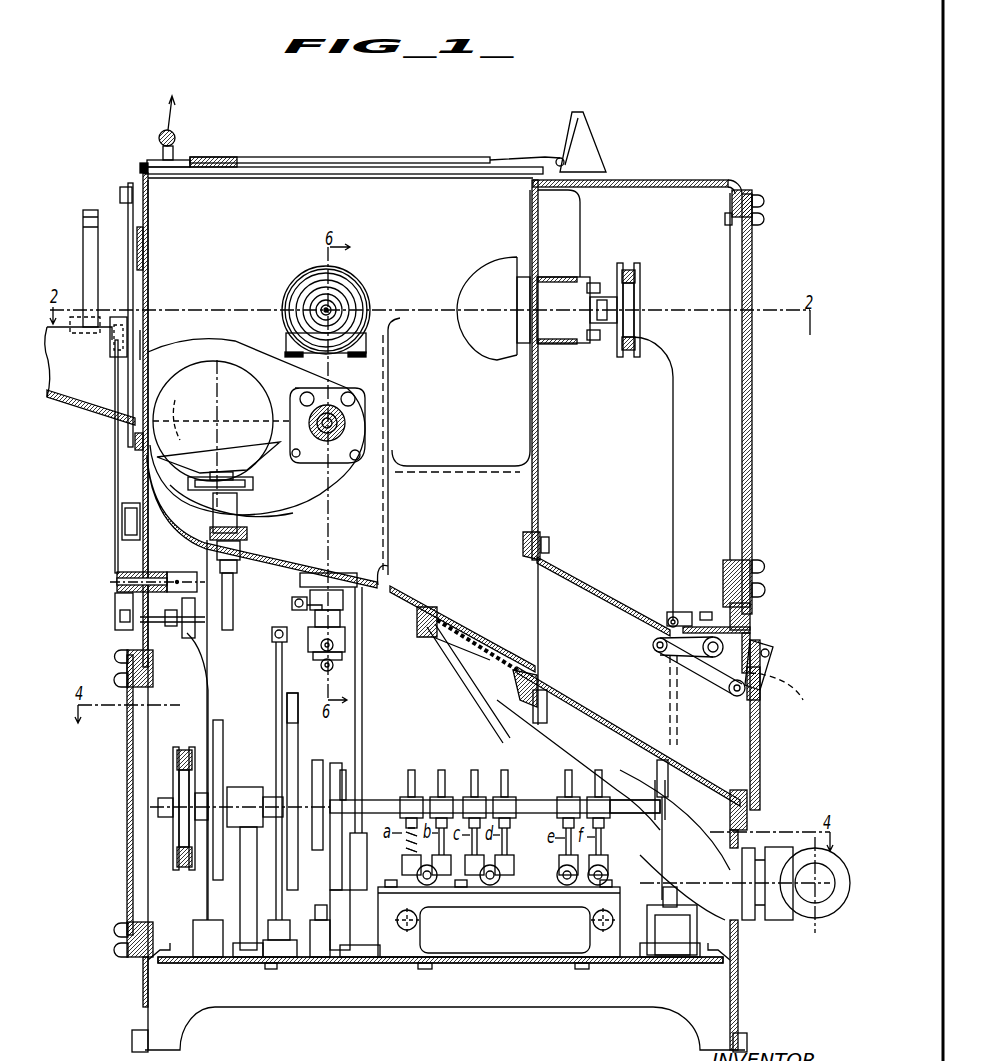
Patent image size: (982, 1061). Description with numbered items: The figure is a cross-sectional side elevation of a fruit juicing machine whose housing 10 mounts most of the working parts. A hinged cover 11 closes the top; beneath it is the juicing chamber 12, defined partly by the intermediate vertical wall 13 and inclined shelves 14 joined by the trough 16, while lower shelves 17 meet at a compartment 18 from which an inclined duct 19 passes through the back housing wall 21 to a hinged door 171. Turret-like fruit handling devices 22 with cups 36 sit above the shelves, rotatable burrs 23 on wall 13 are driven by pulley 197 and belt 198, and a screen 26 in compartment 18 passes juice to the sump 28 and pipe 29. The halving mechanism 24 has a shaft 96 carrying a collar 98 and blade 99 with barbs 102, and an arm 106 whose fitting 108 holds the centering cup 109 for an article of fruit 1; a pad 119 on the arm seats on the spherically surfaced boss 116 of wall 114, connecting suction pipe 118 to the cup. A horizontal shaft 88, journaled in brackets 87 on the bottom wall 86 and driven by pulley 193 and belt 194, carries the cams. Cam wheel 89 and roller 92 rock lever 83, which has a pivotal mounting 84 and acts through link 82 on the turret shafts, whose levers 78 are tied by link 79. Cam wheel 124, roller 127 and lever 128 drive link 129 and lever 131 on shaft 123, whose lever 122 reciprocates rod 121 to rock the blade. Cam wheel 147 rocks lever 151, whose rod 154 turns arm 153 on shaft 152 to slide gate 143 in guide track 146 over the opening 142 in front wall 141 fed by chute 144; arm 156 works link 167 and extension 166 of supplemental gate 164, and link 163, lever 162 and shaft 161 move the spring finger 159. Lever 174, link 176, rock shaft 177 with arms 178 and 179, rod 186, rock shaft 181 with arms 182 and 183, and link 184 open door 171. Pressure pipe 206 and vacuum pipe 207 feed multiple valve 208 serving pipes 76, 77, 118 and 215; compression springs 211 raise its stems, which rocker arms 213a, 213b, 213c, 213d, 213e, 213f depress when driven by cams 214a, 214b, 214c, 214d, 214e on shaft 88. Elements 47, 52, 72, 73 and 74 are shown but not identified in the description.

The article of fruit 1 is at (180, 350).
The housing 10 is at (623, 180).
The hinged cover 11 is at (302, 160).
The chamber 12 is at (382, 197).
The intermediate vertical wall 13 is at (538, 408).
The inclined shelves 14 is at (380, 355).
The trough 16 is at (382, 588).
The lower shelves 17 is at (468, 465).
The compartment 18 is at (498, 527).
The inclined duct 19 is at (602, 607).
The back housing wall 21 is at (740, 827).
The turret-like fruit handling devices 22 is at (312, 263).
The rotatable burrs 23 is at (493, 263).
The mechanism for halving and presenting fruit 24 is at (337, 488).
The screen 26 is at (442, 657).
The sump 28 is at (472, 687).
The pipe 29 is at (578, 745).
The cups 36 is at (357, 283).
The motor shaft 47 is at (313, 293).
The valve mounting block 52 is at (303, 577).
The valve body 72 is at (345, 632).
The lower valve port 73 is at (338, 667).
The valve port 74 is at (332, 643).
The pipe 76 is at (488, 886).
The pipe 77 is at (430, 886).
The levers 78 is at (308, 612).
The link 79 is at (292, 603).
The link 82 is at (272, 635).
The lever 83 is at (276, 665).
The pivotal mounting 84 is at (313, 963).
The bottom wall 86 is at (470, 964).
The journal brackets 87 is at (240, 903).
The horizontal shaft 88 is at (378, 795).
The cam wheel 89 is at (298, 690).
The roller 92 is at (285, 795).
The rotatable shaft 96 is at (318, 447).
The collar 98 is at (365, 408).
The cutting blade 99 is at (220, 330).
The barbs 102 is at (210, 432).
The arm 106 is at (291, 510).
The fitting 108 is at (205, 485).
The fruit centering cup 109 is at (172, 462).
The wall 114 is at (237, 570).
The spherically surfaced boss 116 is at (245, 540).
The suction pipe 118 is at (233, 596).
The pad 119 is at (240, 527).
The rod 121 is at (363, 693).
The lever 122 is at (375, 860).
The shaft 123 is at (318, 915).
The cam wheel 124 is at (315, 760).
The roller 127 is at (342, 765).
The lever 128 is at (325, 868).
The link 129 is at (345, 775).
The lever 131 is at (360, 963).
The front wall 141 is at (148, 205).
The opening 142 is at (143, 277).
The gate 143 is at (137, 353).
The chute 144 is at (70, 400).
The guide track 146 is at (140, 180).
The cam wheel 147 is at (220, 722).
The lever 151 is at (215, 663).
The shaft 152 is at (117, 578).
The arm 153 is at (180, 572).
The rod 154 is at (185, 633).
The arm 156 is at (120, 628).
The finger 159 is at (88, 212).
The shaft 161 is at (95, 345).
The lever 162 is at (110, 355).
The link 163 is at (115, 465).
The supplemental gate 164 is at (137, 293).
The depending extension 166 is at (140, 447).
The link 167 is at (122, 530).
The hinged door 171 is at (760, 722).
The pivoted lever 174 is at (655, 792).
The link 176 is at (668, 797).
The rock shaft 177 is at (695, 922).
The arm 178 is at (673, 893).
The arm 179 is at (670, 887).
The rock shaft 181 is at (712, 670).
The arm 182 is at (677, 620).
The arm 183 is at (656, 648).
The link 184 is at (665, 660).
The rod 186 is at (680, 714).
The pulley 193 is at (176, 748).
The belt 194 is at (182, 870).
The pulley 197 is at (640, 270).
The belt 198 is at (623, 358).
The pipe 206 is at (418, 925).
The pipe 207 is at (593, 925).
The multiple valve 208 is at (487, 907).
The compression spring 211 is at (406, 845).
The rocker arm 213a is at (415, 805).
The rocker arm 213b is at (447, 800).
The rocker arm 213c is at (480, 800).
The rocker arm 213d is at (508, 810).
The rocker arm 213e is at (572, 795).
The rocker arm 213f is at (615, 813).
The cam 214a is at (412, 783).
The cam 214b is at (443, 770).
The cam 214c is at (476, 770).
The cam 214d is at (508, 768).
The cam 214e is at (569, 772).
The pipe 215 is at (560, 872).